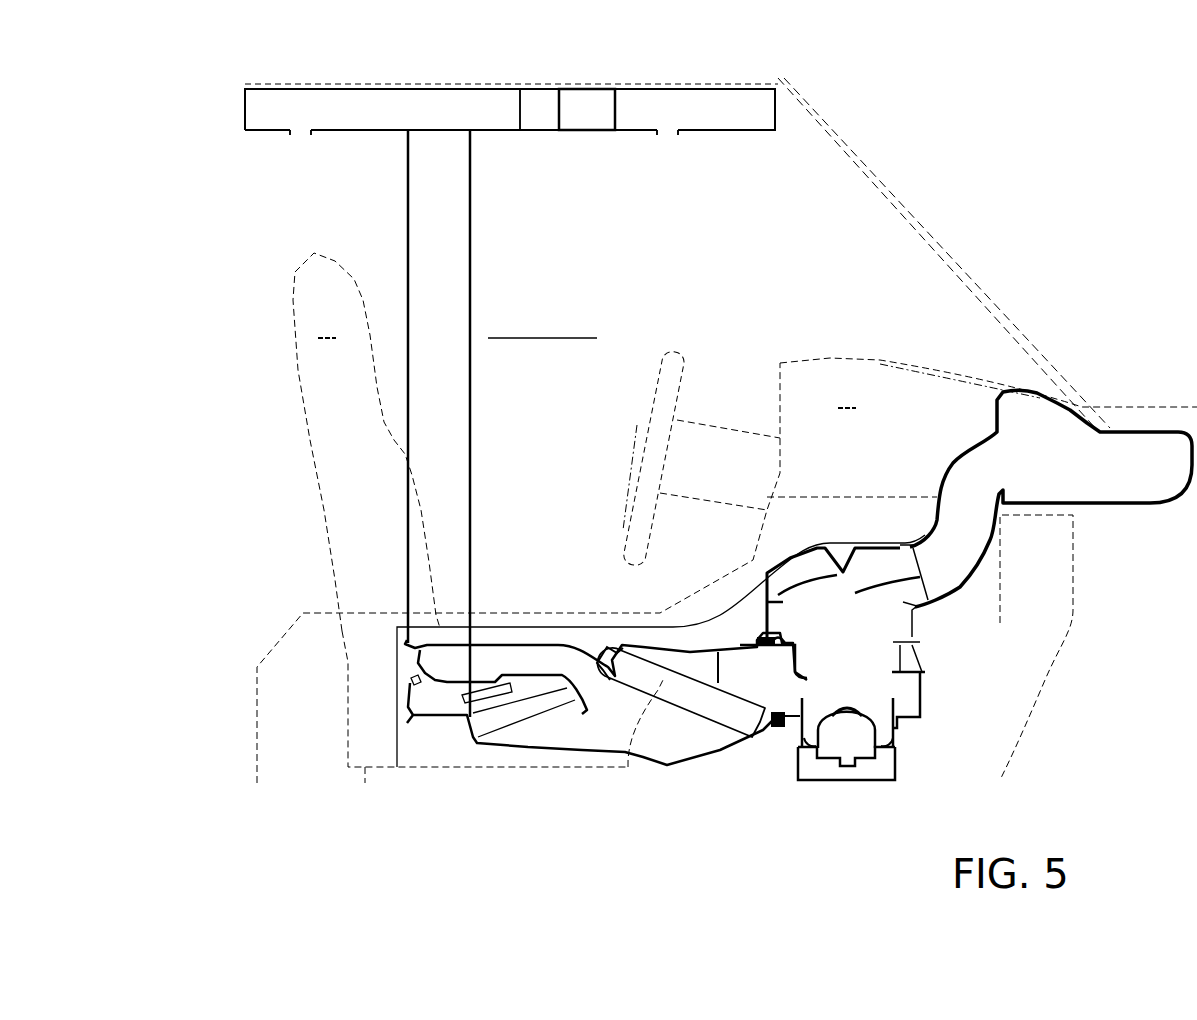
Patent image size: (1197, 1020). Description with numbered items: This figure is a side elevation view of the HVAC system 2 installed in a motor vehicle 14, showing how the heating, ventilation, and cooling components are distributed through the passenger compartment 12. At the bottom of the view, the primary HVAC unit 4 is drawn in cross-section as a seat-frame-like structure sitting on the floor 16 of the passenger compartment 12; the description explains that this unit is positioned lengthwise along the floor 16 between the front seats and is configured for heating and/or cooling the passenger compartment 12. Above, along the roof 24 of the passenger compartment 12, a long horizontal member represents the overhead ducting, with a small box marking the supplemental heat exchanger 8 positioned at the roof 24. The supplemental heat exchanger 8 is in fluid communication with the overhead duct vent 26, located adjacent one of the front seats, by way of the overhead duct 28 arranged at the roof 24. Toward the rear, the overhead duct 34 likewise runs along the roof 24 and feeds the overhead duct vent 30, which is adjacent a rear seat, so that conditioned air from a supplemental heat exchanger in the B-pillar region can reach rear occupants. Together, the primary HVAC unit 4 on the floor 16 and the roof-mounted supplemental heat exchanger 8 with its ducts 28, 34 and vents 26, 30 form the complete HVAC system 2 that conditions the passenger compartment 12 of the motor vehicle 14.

The HVAC system 2 is at (1050, 200).
The motor vehicle 14 is at (982, 449).
The primary HVAC unit 4 is at (848, 645).
The supplemental heat exchanger 8 is at (590, 132).
The passenger compartment 12 is at (725, 277).
The floor 16 is at (742, 785).
The roof 24 is at (397, 77).
The overhead duct vent 26 is at (667, 133).
The overhead duct 28 is at (555, 87).
The overhead duct vent 30 is at (298, 133).
The overhead duct 34 is at (243, 115).